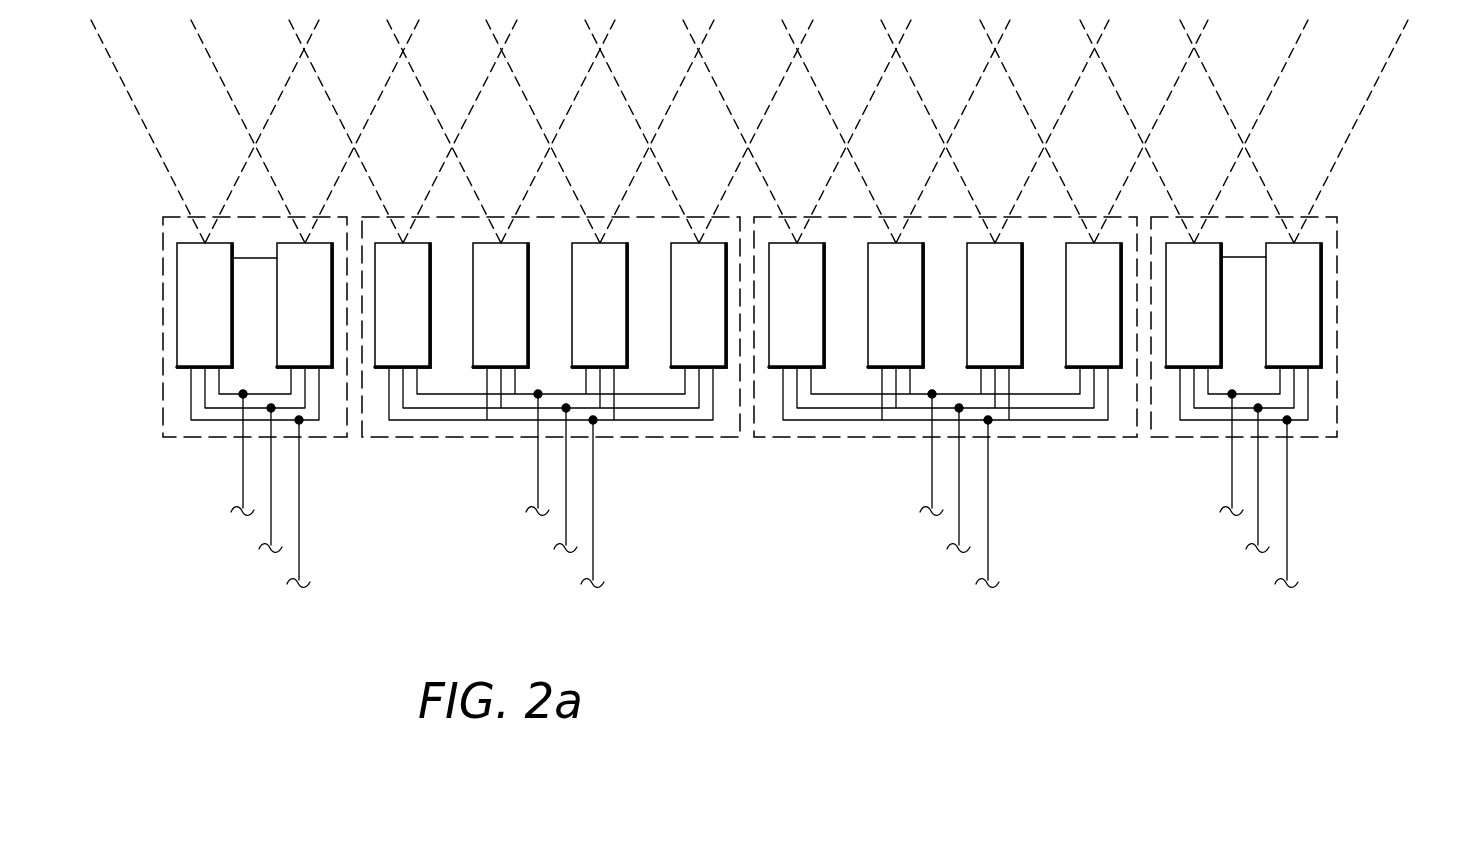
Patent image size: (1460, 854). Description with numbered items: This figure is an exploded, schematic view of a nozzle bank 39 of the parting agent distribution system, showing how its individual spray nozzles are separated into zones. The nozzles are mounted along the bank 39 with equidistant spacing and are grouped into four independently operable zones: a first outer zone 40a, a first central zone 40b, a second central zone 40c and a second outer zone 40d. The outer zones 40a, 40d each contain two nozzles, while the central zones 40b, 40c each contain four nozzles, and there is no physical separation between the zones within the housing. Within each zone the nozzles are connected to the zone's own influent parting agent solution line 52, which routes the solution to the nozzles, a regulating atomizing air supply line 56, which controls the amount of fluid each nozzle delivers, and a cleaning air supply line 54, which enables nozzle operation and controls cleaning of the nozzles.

The bank 39 is at (1365, 196).
The first outer zone 40a is at (190, 438).
The first central zone 40b is at (448, 437).
The second central zone 40c is at (812, 437).
The second outer zone 40d is at (1172, 438).
The influent parting agent solution line 52 is at (302, 540).
The cleaning air supply line 54 is at (245, 472).
The regulating atomizing air supply line 56 is at (272, 500).